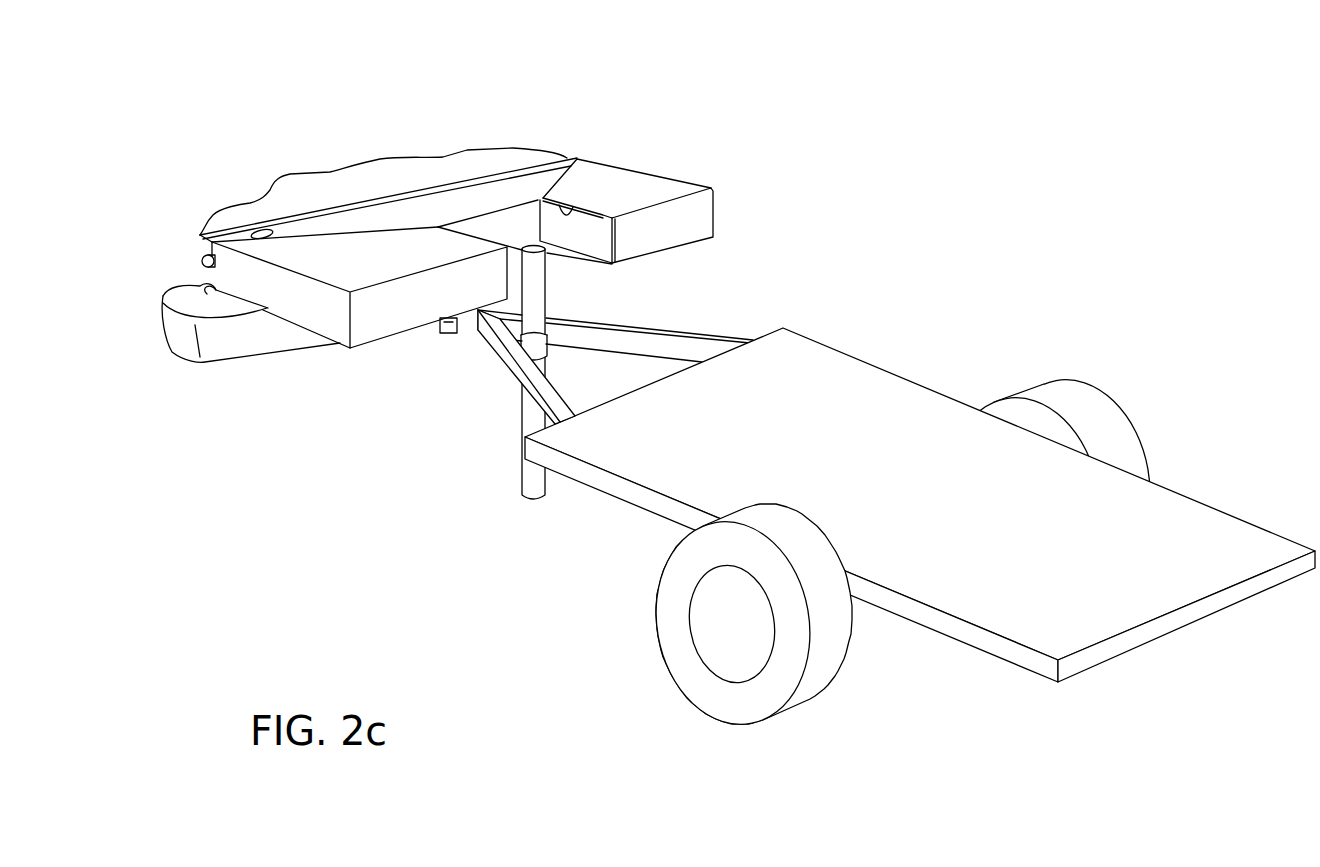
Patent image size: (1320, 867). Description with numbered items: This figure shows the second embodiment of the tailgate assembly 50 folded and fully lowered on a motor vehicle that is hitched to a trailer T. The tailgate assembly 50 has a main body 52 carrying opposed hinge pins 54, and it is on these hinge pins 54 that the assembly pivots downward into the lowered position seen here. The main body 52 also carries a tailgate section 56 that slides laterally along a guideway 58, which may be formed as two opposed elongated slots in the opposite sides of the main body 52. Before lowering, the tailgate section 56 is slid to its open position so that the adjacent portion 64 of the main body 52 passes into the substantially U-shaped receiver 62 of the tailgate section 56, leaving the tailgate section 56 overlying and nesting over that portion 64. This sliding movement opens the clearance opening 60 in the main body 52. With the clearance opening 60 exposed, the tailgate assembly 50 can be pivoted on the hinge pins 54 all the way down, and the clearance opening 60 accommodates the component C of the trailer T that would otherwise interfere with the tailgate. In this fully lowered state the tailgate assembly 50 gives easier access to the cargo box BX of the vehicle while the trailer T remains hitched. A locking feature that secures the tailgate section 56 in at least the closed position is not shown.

The tailgate assembly 50 is at (440, 235).
The main body 52 is at (305, 305).
The hinge pins 54 is at (201, 262).
The tailgate section 56 is at (648, 195).
The guideway 58 is at (598, 180).
The clearance opening 60 is at (507, 233).
The receiver 62 is at (560, 203).
The portion of the main body 64 is at (590, 240).
The cargo box BX is at (330, 187).
The component of the trailer C is at (538, 290).
The trailer T is at (885, 422).